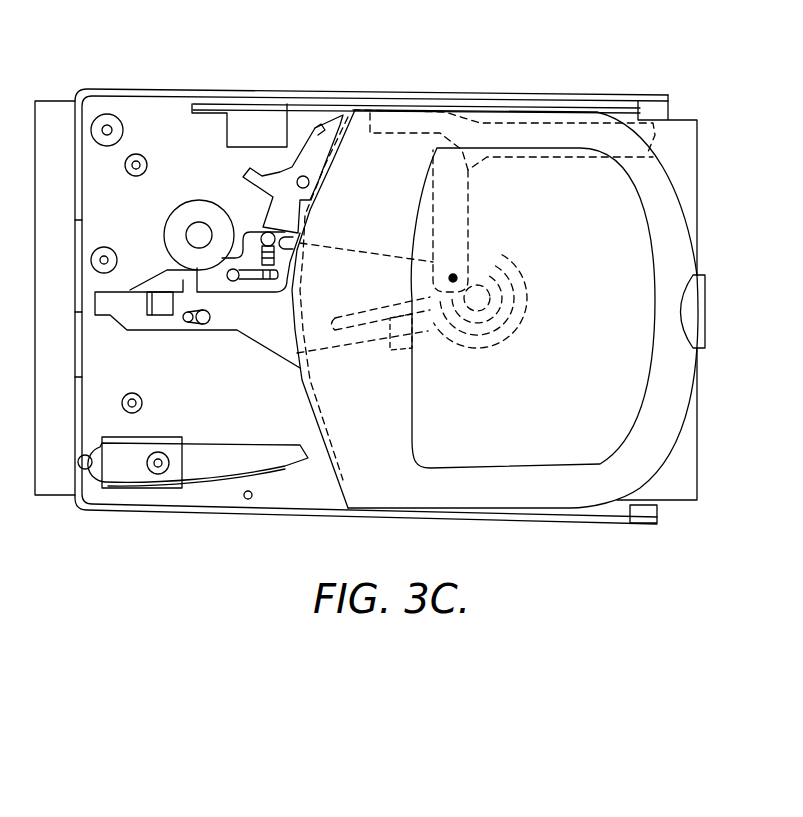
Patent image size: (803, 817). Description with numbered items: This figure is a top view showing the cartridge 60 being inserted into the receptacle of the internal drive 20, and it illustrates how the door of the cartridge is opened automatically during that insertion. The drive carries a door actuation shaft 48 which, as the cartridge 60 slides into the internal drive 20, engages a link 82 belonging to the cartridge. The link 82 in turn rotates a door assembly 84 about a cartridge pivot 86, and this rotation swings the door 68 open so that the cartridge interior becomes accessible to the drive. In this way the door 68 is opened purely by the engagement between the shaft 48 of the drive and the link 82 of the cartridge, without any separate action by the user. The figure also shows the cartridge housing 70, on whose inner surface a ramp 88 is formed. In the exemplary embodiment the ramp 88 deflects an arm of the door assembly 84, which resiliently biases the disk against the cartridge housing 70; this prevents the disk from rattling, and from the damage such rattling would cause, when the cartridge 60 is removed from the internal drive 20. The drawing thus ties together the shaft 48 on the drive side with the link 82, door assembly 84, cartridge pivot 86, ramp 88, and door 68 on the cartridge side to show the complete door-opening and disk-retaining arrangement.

The internal drive 20 is at (262, 40).
The shaft 48 is at (317, 110).
The cartridge 60 is at (533, 113).
The door 68 is at (325, 413).
The cartridge housing 70 is at (680, 460).
The link 82 is at (463, 212).
The door assembly 84 is at (380, 262).
The cartridge pivot 86 is at (523, 278).
The ramp 88 is at (395, 350).